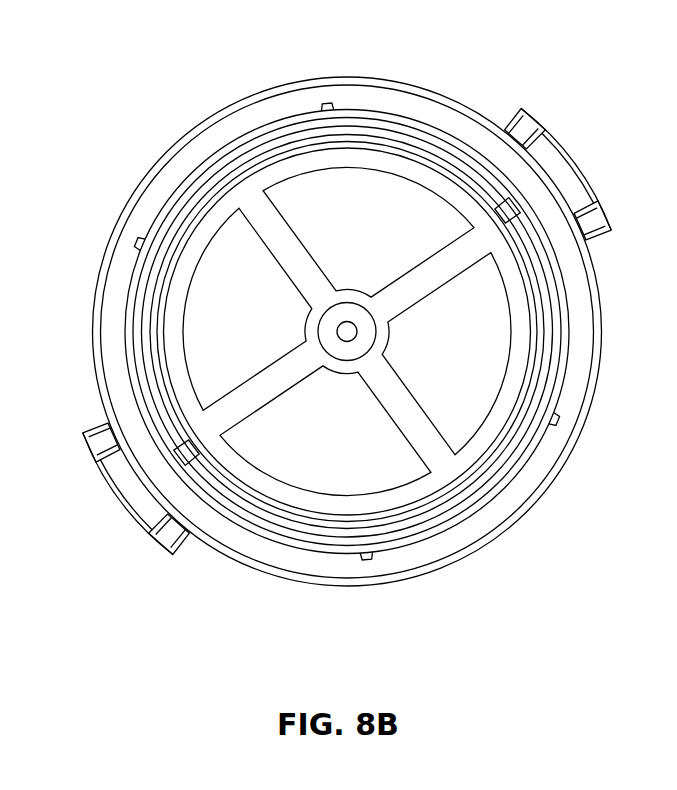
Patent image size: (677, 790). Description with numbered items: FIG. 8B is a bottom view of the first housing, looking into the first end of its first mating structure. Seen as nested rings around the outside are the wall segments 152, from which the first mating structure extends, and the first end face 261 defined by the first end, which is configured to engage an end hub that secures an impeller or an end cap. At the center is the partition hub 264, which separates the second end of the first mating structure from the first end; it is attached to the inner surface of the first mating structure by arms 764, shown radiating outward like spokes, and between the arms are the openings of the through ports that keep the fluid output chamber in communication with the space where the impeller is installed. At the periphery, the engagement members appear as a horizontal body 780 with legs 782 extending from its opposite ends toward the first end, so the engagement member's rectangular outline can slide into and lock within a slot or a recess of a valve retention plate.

The wall segments 152 is at (195, 155).
The first end face 261 is at (282, 548).
The partition hub 264 is at (349, 290).
The arms 764 is at (407, 392).
The horizontal body 780 is at (570, 147).
The legs 782 is at (503, 122).